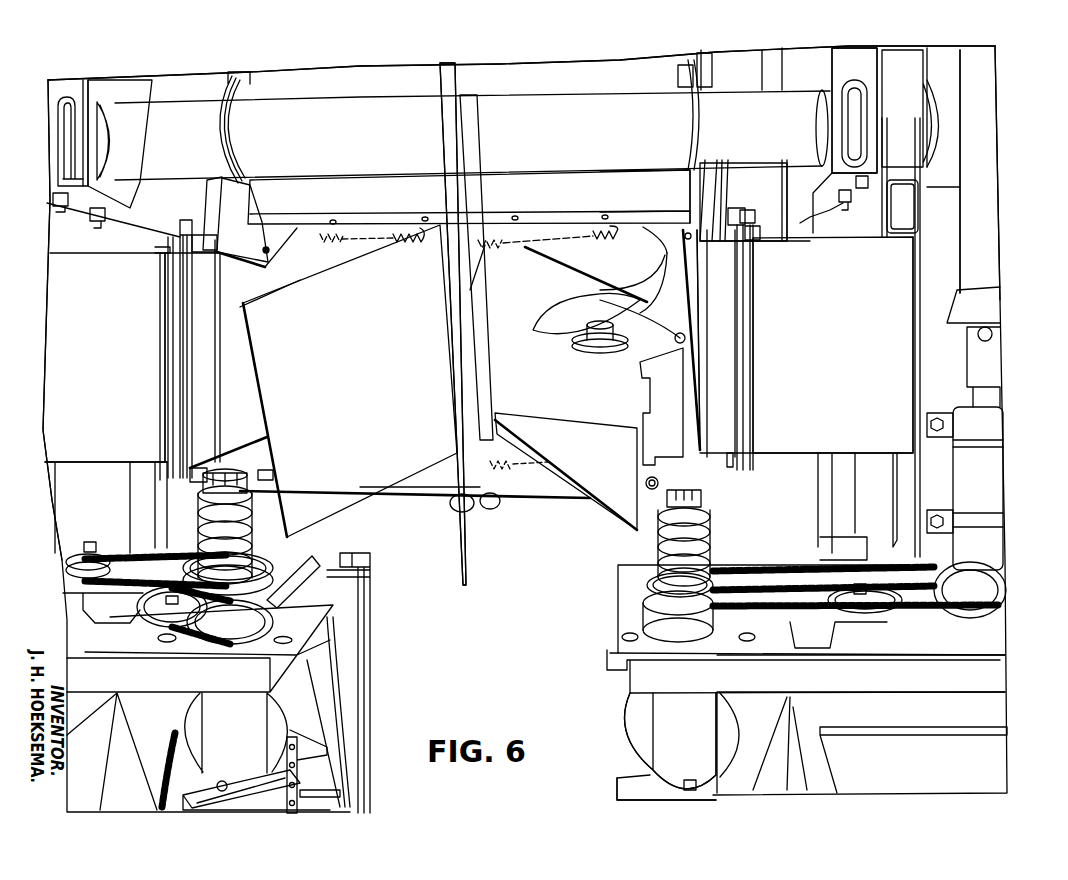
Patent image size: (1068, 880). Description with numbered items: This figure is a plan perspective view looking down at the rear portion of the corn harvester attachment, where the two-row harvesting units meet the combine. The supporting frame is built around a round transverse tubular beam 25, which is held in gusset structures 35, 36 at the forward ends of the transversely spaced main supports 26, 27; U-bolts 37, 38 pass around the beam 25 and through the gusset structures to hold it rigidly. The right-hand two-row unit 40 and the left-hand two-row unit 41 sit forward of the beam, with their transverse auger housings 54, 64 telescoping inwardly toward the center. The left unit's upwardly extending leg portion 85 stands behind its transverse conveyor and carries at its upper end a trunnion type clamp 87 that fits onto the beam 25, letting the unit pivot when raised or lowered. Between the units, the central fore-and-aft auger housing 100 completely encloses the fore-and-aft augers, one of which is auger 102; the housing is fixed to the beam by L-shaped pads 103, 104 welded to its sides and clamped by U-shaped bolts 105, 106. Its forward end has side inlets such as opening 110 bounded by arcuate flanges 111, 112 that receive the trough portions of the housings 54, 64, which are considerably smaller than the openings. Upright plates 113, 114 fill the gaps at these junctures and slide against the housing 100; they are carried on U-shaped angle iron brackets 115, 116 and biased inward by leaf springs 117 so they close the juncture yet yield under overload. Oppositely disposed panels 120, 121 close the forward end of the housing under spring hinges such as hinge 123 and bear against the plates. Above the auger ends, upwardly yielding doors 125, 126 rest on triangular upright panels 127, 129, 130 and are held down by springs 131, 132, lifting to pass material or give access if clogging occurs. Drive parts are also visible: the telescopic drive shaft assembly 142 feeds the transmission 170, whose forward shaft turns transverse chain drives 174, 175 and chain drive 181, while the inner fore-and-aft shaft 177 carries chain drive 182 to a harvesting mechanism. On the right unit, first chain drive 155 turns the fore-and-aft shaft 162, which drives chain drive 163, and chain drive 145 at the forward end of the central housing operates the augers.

The transverse tubular beam 25 is at (300, 112).
The main support 26 is at (93, 85).
The main support 27 is at (823, 68).
The gusset structure 35 is at (122, 85).
The gusset structure 36 is at (862, 62).
The U-bolt 37 is at (60, 142).
The U-bolt 38 is at (862, 108).
The right-hand two-row corn harvester 40 is at (372, 655).
The left-hand two-row harvester 41 is at (617, 703).
The transverse auger housing 54 is at (55, 323).
The transverse auger housing 64 is at (869, 329).
The upwardly extending leg portion 85 is at (866, 225).
The trunnion type clamp 87 is at (905, 62).
The auger housing 100 is at (612, 68).
The auger 102 is at (600, 332).
The L-shaped bracket or pad 103 is at (247, 95).
The L-shaped bracket or pad 104 is at (690, 66).
The U-shaped bolt 105 is at (231, 150).
The U-shaped bolt 106 is at (696, 138).
The side opening 110 is at (697, 280).
The arcuate flange 111 is at (262, 236).
The arcuate flange 112 is at (690, 196).
The upright fore-and-aft extending plate 113 is at (214, 227).
The upright fore-and-aft extending plate 114 is at (727, 197).
The U-shaped angle iron bracket 115 is at (163, 251).
The U-shaped angle iron bracket 116 is at (760, 236).
The leaf spring 117 is at (195, 222).
The panel 120 is at (273, 472).
The panel 121 is at (665, 437).
The spring hinge 123 is at (646, 484).
The upwardly yielding door 125 is at (318, 292).
The upwardly yielding door 126 is at (464, 520).
The triangular shaped upright panel 127 is at (302, 230).
The triangular shaped upright panel 129 is at (582, 268).
The triangular shaped upright panel 130 is at (590, 488).
The spring 131 is at (355, 238).
The spring 132 is at (495, 240).
The telescopic drive shaft assembly 142 is at (975, 117).
The chain drive 145 is at (456, 507).
The first chain drive 155 is at (125, 558).
The fore-and-aft extending shaft 162 is at (236, 480).
The chain drive 163 is at (160, 622).
The transmission 170 is at (985, 488).
The transverse chain drive 174 is at (920, 606).
The transverse chain drive 175 is at (1000, 566).
The inner fore-and-aft drive shaft 177 is at (690, 490).
The chain drive 181 is at (1006, 607).
The chain drive 182 is at (745, 640).